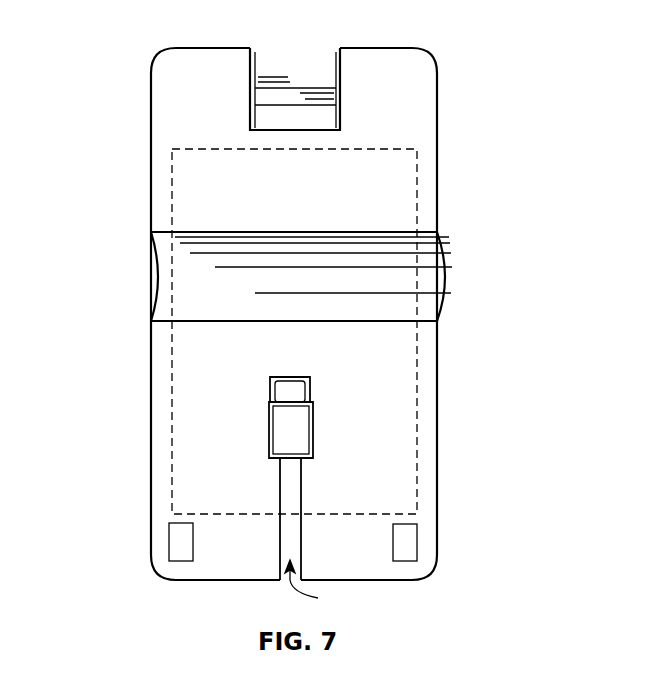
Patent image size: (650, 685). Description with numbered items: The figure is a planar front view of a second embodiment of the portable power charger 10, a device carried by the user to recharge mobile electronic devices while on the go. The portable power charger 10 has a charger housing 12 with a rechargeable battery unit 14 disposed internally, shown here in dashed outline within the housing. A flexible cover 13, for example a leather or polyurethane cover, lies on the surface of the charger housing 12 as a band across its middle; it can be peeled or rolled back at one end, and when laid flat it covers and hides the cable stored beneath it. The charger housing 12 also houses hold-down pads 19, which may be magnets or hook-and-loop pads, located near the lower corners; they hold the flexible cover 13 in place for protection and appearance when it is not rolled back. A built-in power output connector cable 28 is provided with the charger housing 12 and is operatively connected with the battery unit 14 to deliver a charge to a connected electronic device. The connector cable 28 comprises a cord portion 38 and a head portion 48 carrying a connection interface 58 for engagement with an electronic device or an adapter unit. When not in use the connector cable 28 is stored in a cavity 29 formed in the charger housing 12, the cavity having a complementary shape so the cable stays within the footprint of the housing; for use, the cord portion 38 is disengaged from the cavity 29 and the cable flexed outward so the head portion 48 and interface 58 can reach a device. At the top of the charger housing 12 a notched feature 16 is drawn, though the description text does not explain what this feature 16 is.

The portable power charger 10 is at (443, 46).
The charger housing 12 is at (440, 128).
The flexible cover 13 is at (453, 277).
The rechargeable battery unit 14 is at (410, 190).
The port / opening 16 is at (305, 46).
The hold-down pads 19 is at (178, 554).
The power output connector cable 28 is at (319, 586).
The cavity 29 is at (268, 444).
The cord portion 38 is at (290, 497).
The head portion 48 is at (290, 444).
The connection interface 58 is at (290, 389).